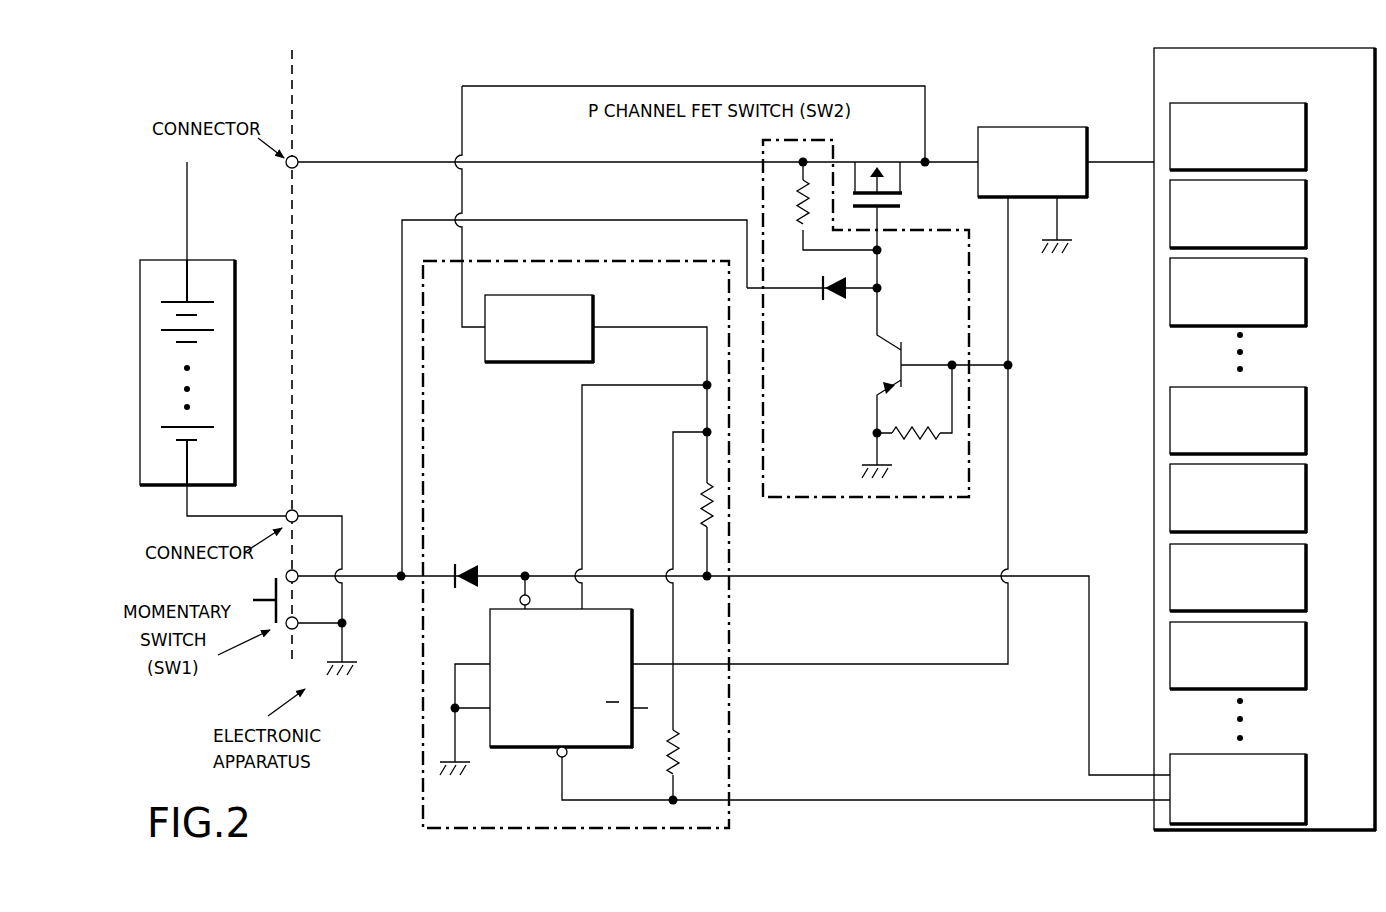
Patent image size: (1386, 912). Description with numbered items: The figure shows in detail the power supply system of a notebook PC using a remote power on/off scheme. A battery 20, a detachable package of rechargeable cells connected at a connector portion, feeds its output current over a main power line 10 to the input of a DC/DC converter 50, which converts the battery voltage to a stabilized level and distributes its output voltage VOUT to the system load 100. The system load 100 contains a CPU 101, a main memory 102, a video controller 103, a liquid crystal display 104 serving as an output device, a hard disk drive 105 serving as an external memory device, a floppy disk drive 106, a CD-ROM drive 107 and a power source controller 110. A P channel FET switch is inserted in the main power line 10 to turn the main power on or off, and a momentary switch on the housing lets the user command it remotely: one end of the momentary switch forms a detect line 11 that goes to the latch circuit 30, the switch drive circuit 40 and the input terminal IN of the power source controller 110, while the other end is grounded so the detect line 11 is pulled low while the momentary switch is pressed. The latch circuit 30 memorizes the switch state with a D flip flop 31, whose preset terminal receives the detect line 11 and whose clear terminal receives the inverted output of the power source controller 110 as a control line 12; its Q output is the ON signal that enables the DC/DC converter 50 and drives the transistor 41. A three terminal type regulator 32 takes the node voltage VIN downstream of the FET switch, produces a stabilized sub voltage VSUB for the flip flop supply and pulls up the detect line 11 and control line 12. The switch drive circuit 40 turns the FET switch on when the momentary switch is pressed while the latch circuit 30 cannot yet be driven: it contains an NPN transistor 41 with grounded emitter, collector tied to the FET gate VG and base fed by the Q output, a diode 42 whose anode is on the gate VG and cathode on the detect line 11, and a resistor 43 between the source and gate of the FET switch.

The main power line 10 is at (358, 148).
The detect line 11 is at (373, 560).
The control line 12 is at (1040, 785).
The battery 20 is at (218, 260).
The latch circuit 30 is at (654, 544).
The D flip flop 31 is at (534, 749).
The three terminal type regulator 32 is at (527, 364).
The switch drive circuit 40 is at (880, 341).
The transistor 41 is at (907, 337).
The diode 42 is at (835, 303).
The resistor 43 is at (795, 208).
The DC/DC converter 50 is at (1018, 127).
The system load 100 is at (1332, 85).
The CPU 101 is at (1306, 132).
The main memory 102 is at (1306, 215).
The video controller 103 is at (1306, 292).
The liquid crystal display 104 is at (1306, 412).
The hard disk drive 105 is at (1306, 498).
The floppy disk drive 106 is at (1306, 574).
The CD-ROM drive 107 is at (1306, 655).
The power source controller 110 is at (1306, 792).